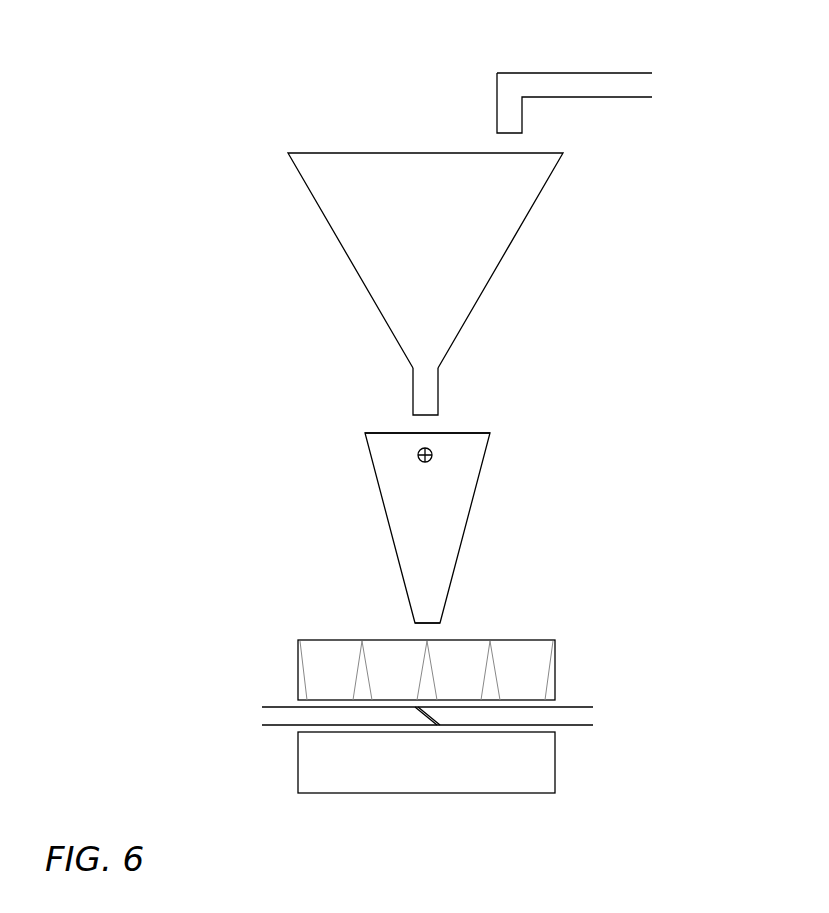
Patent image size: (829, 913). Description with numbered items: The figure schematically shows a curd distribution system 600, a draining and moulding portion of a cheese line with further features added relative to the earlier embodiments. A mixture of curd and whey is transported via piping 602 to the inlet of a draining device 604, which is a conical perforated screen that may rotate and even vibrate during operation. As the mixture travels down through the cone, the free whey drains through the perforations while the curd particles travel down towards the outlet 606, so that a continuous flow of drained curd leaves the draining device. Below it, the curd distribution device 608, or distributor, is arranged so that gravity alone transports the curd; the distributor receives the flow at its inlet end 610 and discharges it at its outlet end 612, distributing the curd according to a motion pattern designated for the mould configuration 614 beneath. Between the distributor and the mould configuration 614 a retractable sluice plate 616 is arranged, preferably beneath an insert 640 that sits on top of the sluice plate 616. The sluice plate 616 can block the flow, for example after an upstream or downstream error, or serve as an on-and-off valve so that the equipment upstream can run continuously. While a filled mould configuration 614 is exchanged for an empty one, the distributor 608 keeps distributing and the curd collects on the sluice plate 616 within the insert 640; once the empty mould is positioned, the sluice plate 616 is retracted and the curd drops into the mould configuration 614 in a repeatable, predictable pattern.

The curd distribution system 600 is at (292, 84).
The piping 602 is at (600, 72).
The draining device 604 is at (483, 287).
The outlet of the draining device 606 is at (438, 393).
The curd distribution device 608 is at (450, 518).
The inlet end 610 is at (387, 432).
The outlet end 612 is at (413, 623).
The mould configuration 614 is at (555, 782).
The sluice plate 616 is at (277, 712).
The insert 640 is at (555, 657).